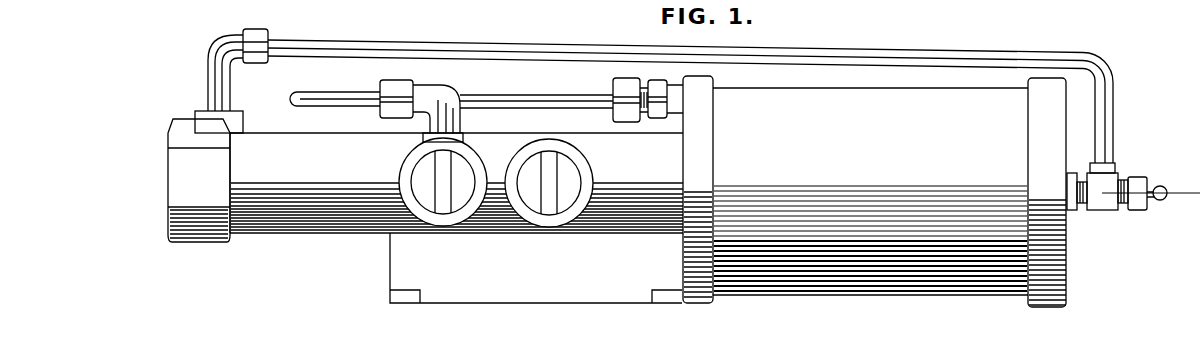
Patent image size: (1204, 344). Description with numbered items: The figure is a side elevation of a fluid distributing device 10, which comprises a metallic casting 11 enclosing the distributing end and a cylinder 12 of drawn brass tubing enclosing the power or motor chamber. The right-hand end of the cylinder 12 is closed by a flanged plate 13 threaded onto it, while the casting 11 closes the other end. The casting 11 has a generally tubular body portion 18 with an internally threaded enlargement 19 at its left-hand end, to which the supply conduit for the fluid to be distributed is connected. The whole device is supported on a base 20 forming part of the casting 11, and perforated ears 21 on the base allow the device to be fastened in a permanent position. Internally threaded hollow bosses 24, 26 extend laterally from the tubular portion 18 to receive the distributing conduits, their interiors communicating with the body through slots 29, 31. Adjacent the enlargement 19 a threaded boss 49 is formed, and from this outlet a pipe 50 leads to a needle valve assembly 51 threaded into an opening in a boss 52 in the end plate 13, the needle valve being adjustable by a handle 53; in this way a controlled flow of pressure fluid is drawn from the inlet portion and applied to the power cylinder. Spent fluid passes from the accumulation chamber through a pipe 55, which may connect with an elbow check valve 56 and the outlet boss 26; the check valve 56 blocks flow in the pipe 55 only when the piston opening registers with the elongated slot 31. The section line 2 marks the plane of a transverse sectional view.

The section line 2- 2 is at (333, 180).
The distributing device 10 is at (714, 308).
The casting 11 is at (343, 237).
The cylinder 12 is at (830, 102).
The flanged plate 13 is at (1062, 247).
The tubular body portion 18 is at (282, 212).
The internally threaded enlargement 19 is at (178, 128).
The base 20 is at (498, 285).
The perforated ears 21 is at (407, 292).
The hollow boss 24 is at (589, 185).
The hollow boss 26 is at (409, 167).
The slot 29 is at (553, 163).
The elongated slot 31 is at (443, 178).
The threaded boss 49 is at (201, 112).
The pipe 50 is at (494, 44).
The needle valve assembly 51 is at (1108, 208).
The boss 52 is at (1072, 173).
The handle 53 is at (1157, 188).
The pipe 55 is at (324, 97).
The elbow check valve 56 is at (447, 92).